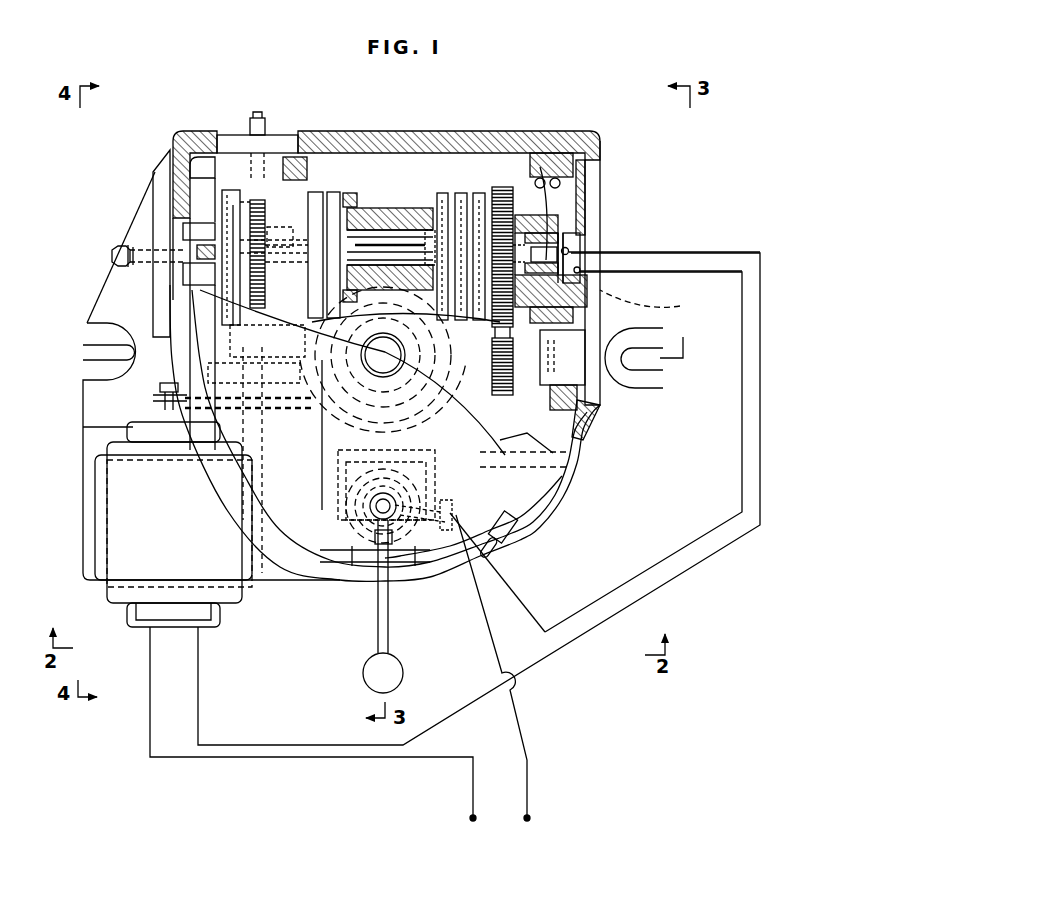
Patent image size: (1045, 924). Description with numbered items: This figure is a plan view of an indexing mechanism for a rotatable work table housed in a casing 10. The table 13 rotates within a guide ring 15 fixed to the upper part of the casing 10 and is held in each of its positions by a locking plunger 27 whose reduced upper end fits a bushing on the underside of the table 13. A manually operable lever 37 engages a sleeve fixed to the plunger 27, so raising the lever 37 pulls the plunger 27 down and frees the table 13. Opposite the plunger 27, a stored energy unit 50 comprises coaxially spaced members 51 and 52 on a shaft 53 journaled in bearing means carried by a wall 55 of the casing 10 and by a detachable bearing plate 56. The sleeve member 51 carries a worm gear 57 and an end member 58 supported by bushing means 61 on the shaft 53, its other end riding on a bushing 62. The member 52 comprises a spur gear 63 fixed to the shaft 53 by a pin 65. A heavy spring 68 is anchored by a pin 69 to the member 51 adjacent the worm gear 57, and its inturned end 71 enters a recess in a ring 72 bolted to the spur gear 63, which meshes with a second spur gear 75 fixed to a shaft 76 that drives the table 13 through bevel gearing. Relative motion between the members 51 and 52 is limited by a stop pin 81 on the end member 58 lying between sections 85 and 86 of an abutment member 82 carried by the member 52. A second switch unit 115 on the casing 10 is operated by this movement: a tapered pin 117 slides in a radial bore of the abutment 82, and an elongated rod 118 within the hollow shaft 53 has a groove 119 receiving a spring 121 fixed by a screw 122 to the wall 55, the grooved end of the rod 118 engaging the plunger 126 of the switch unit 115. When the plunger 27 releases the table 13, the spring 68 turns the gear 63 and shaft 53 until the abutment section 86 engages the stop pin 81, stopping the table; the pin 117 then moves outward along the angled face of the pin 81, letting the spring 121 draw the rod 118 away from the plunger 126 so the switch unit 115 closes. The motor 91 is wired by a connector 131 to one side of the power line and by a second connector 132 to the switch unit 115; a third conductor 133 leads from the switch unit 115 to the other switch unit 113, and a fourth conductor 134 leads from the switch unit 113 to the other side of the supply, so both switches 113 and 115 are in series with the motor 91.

The casing 10 is at (392, 130).
The table 13 is at (293, 480).
The guide ring 15 is at (307, 530).
The locking plunger 27 is at (365, 560).
The manually operable lever 37 is at (390, 616).
The stored energy unit 50 is at (453, 184).
The sleeve member 51 is at (372, 205).
The member 52 is at (508, 184).
The shaft 53 is at (390, 233).
The wall 55 is at (479, 250).
The detachable bearing plate 56 is at (160, 205).
The worm gear 57 is at (263, 308).
The end member 58 is at (229, 200).
The bushing means 61 is at (192, 157).
The bushing 62 is at (427, 207).
The spur gear 63 is at (498, 185).
The pin 65 is at (680, 306).
The spring 68 is at (350, 193).
The pin 69 is at (296, 135).
The inturned end 71 is at (548, 215).
The ring 72 is at (518, 302).
The second spur gear 75 is at (500, 396).
The shaft 76 is at (446, 382).
The stop pin 81 is at (183, 257).
The abutment member 82 is at (178, 283).
The section 85 is at (212, 245).
The abutment section 86 is at (192, 283).
The motor 91 is at (110, 520).
The switch unit 113 is at (455, 517).
The second switch unit 115 is at (569, 251).
The pin 117 is at (212, 228).
The elongated rod 118 is at (405, 253).
The groove 119 is at (581, 240).
The spring 121 is at (575, 233).
The screw 122 is at (558, 185).
The plunger 126 is at (580, 269).
The connector 131 is at (362, 760).
The second connector 132 is at (688, 568).
The third conductor 133 is at (603, 598).
The fourth conductor 134 is at (517, 722).